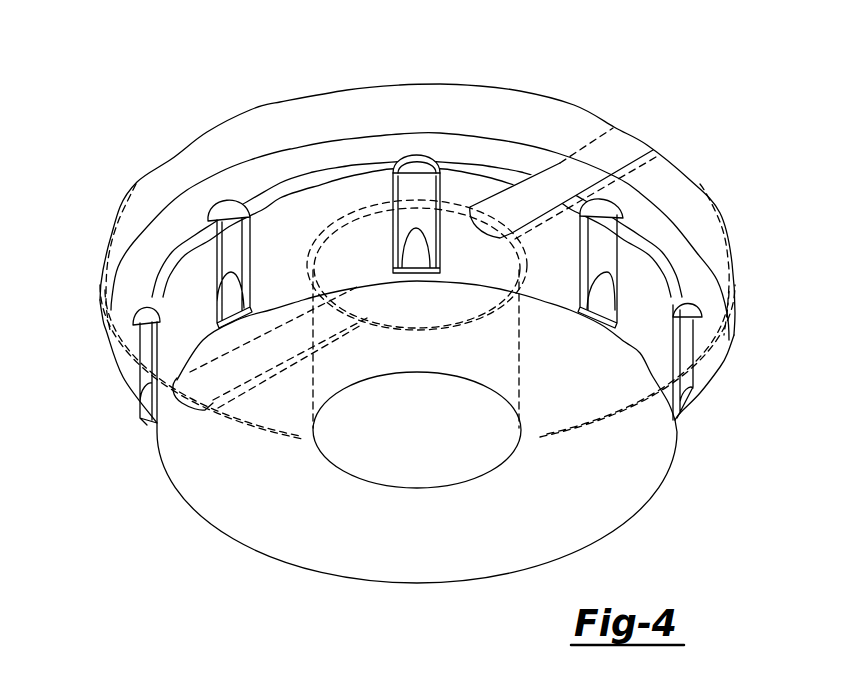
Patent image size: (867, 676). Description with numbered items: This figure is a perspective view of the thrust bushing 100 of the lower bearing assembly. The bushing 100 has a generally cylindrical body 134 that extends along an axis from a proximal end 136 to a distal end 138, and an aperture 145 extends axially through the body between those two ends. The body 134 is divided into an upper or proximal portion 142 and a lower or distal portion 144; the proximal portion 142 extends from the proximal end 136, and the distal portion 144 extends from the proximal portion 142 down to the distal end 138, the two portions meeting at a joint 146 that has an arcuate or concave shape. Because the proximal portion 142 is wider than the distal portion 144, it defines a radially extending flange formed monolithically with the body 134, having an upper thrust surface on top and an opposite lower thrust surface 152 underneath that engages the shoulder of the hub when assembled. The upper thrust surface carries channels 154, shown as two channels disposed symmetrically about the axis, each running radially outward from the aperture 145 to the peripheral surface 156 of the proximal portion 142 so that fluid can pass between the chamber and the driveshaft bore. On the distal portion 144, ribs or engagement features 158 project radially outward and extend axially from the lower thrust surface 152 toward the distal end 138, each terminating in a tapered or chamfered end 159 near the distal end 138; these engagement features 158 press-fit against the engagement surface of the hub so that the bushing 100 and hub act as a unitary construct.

The bushing 100 is at (687, 71).
The body 134 is at (657, 340).
The proximal end 136 is at (207, 131).
The distal end 138 is at (611, 510).
The proximal portion 142 is at (155, 192).
The distal portion 144 is at (177, 322).
The aperture 145 is at (318, 403).
The joint 146 is at (165, 277).
The lower thrust surface 152 is at (278, 169).
The channels 154 is at (542, 170).
The peripheral surface 156 is at (406, 121).
The engagement features 158 is at (229, 242).
The tapered end 159 is at (601, 302).